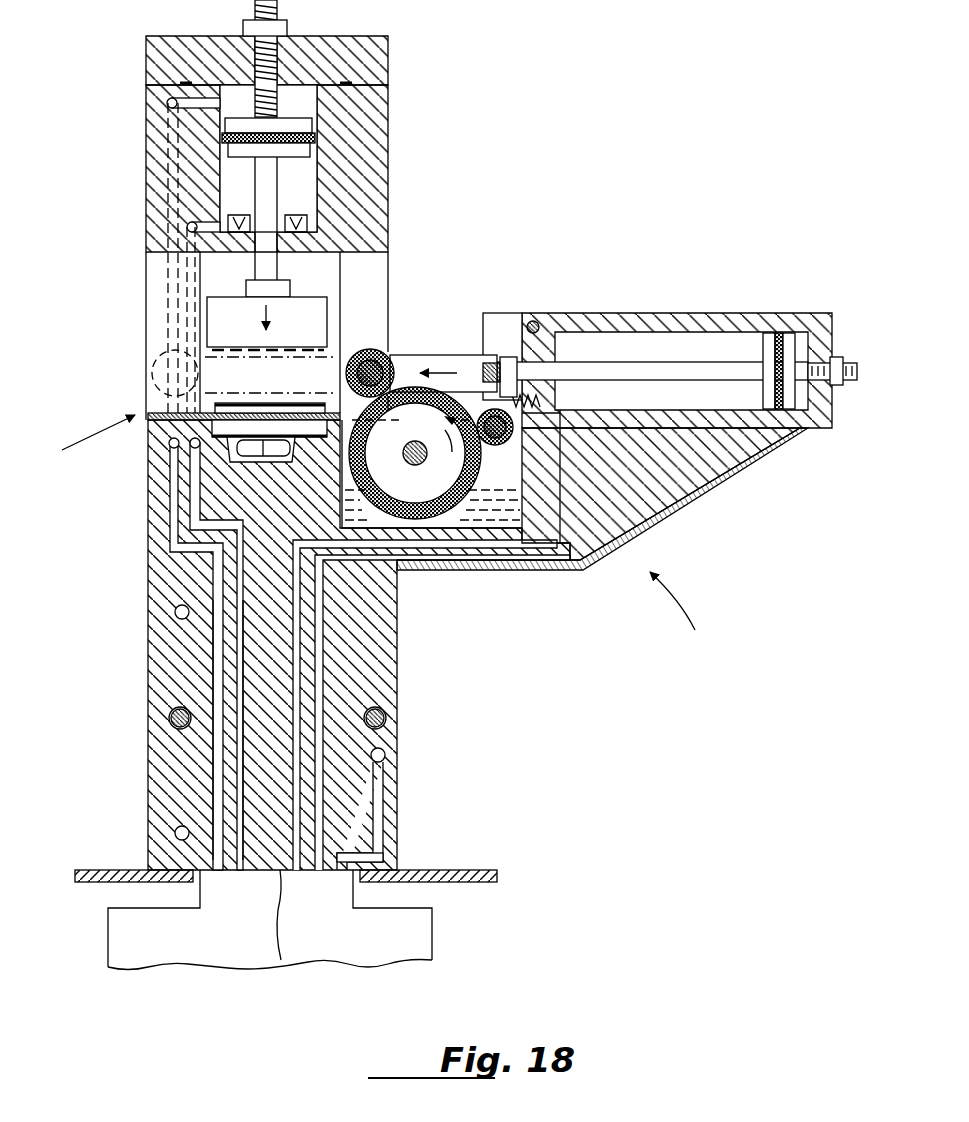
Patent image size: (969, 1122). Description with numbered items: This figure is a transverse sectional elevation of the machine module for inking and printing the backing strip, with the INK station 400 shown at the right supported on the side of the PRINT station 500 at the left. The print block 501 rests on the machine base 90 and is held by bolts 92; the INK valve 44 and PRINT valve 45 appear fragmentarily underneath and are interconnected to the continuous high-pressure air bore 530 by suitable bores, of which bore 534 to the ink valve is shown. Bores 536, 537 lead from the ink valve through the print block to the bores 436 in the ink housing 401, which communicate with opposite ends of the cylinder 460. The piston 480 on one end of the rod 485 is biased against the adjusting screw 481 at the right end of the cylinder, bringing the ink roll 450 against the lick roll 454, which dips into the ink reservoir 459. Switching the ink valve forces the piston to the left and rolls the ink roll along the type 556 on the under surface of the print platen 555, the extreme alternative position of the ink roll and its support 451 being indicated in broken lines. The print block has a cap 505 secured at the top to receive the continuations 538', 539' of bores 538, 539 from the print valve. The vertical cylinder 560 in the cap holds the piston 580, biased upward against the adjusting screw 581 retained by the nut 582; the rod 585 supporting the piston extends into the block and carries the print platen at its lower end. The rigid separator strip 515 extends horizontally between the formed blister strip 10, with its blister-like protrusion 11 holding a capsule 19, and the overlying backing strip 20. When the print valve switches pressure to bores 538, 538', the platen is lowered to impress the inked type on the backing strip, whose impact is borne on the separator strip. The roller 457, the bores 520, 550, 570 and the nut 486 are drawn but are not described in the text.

The formed blister strip 10 is at (307, 450).
The blister-like protrusion 11 is at (232, 445).
The capsule 19 is at (250, 455).
The backing strip 20 is at (252, 398).
The INK valve 44 is at (415, 933).
The PRINT valve 45 is at (140, 955).
The machine base 90 is at (480, 870).
The bolts 92 is at (172, 712).
The INK station 400 is at (684, 613).
The ink housing 401 is at (763, 462).
The bore 436 is at (678, 490).
The ink roll 450 is at (380, 352).
The ink roll support 451 is at (460, 355).
The lick roll 454 is at (455, 487).
The idler roller 457 is at (560, 508).
The ink reservoir 459 is at (510, 512).
The cylinder 460 is at (660, 336).
The piston 480 is at (768, 340).
The adjusting screw 481 is at (855, 376).
The rod 485 is at (667, 373).
The adjusting nut 486 is at (838, 357).
The PRINT station 500 is at (86, 438).
The print block 501 is at (160, 505).
The cap 505 is at (380, 145).
The rigid separator strip 515 is at (325, 405).
The pin bores 520 is at (385, 712).
The continuous high-pressure air bore 530 is at (386, 755).
The bore 534 is at (386, 827).
The bore 536 is at (322, 652).
The bore 537 is at (298, 635).
The bore 538 is at (164, 730).
The bore continuation 538' is at (158, 303).
The bore 539 is at (154, 730).
The bore continuation 539' is at (151, 255).
The port 550 is at (178, 831).
The print platen 555 is at (317, 310).
The type 556 is at (330, 350).
The vertical cylinder 560 is at (310, 210).
The port 570 is at (176, 607).
The piston 580 is at (310, 125).
The adjusting screw 581 is at (255, 8).
The nut 582 is at (287, 26).
The rod 585 is at (272, 176).